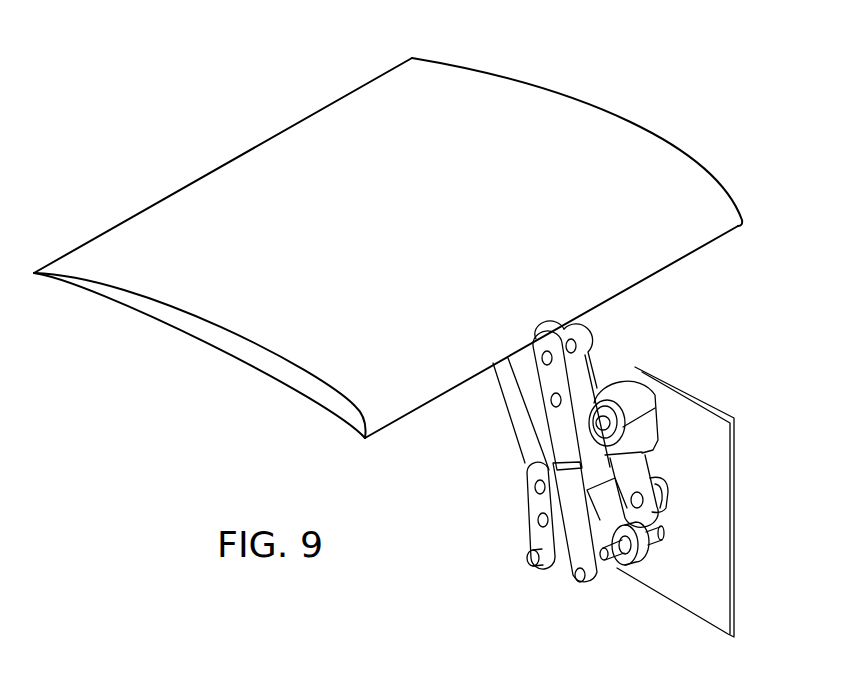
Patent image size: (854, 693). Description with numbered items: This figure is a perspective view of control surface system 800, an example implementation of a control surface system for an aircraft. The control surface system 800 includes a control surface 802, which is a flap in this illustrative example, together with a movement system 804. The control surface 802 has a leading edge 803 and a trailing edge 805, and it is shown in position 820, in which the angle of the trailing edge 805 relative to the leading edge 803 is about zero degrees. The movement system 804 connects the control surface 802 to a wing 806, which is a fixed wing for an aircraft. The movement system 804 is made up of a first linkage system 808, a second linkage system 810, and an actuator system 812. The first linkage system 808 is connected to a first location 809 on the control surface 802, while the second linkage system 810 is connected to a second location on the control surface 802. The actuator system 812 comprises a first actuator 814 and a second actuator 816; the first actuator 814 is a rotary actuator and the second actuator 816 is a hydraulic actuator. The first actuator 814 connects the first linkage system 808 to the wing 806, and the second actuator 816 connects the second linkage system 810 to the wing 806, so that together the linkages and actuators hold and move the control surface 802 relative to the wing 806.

The control surface system 800 is at (728, 115).
The control surface 802 is at (560, 93).
The leading edge 803 is at (672, 256).
The movement system 804 is at (540, 580).
The trailing edge 805 is at (301, 109).
The wing 806 is at (692, 404).
The first linkage system 808 is at (612, 370).
The first location 809 is at (545, 322).
The second linkage system 810 is at (496, 434).
The actuator system 812 is at (684, 503).
The first actuator 814 is at (651, 453).
The second actuator 816 is at (632, 575).
The position 820 is at (184, 180).